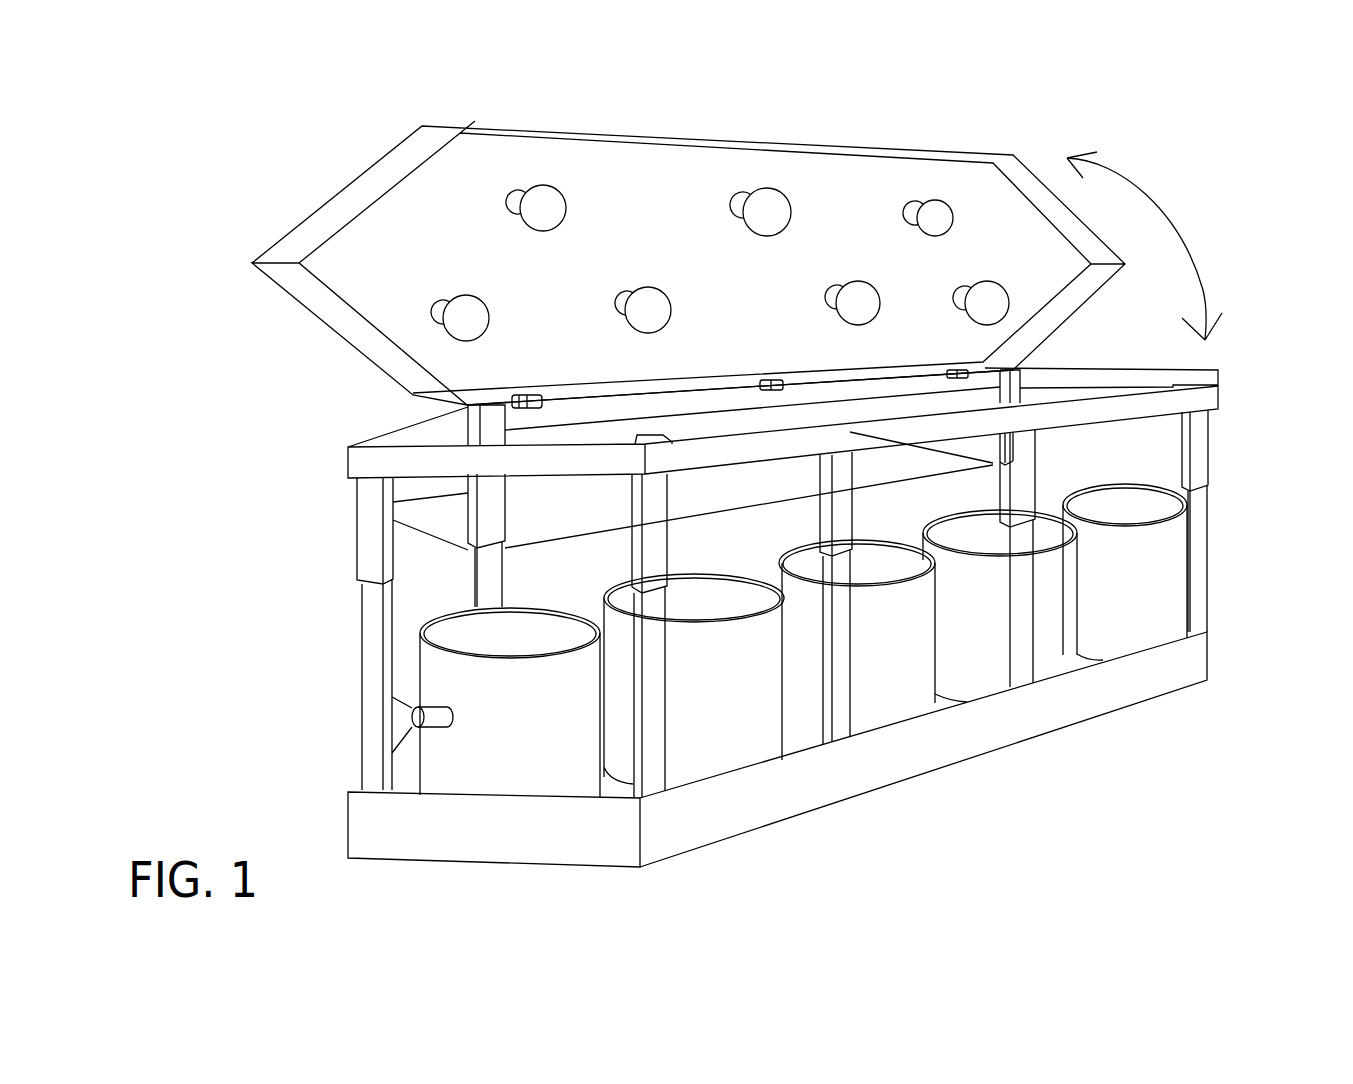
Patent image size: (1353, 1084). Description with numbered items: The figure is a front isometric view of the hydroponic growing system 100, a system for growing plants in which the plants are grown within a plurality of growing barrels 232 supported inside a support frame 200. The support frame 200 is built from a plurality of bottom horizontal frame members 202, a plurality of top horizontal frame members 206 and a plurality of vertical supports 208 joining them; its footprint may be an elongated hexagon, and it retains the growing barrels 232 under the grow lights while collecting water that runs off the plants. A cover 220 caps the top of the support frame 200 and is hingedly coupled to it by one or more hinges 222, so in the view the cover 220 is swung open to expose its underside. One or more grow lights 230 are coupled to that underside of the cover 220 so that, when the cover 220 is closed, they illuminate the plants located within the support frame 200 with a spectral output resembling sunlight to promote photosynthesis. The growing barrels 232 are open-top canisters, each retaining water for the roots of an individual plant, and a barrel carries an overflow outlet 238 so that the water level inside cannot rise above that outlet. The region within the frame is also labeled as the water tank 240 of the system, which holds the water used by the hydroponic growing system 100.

The hydroponic growing system 100 is at (160, 145).
The support frame 200 is at (350, 817).
The bottom horizontal frame members 202 is at (1080, 708).
The top horizontal frame members 206 is at (1195, 400).
The vertical supports 208 is at (1213, 527).
The cover 220 is at (636, 133).
The hinges 222 is at (523, 397).
The grow lights 230 is at (537, 203).
The growing barrels 232 is at (752, 722).
The overflow outlet 238 is at (437, 722).
The water tank 240 is at (773, 560).